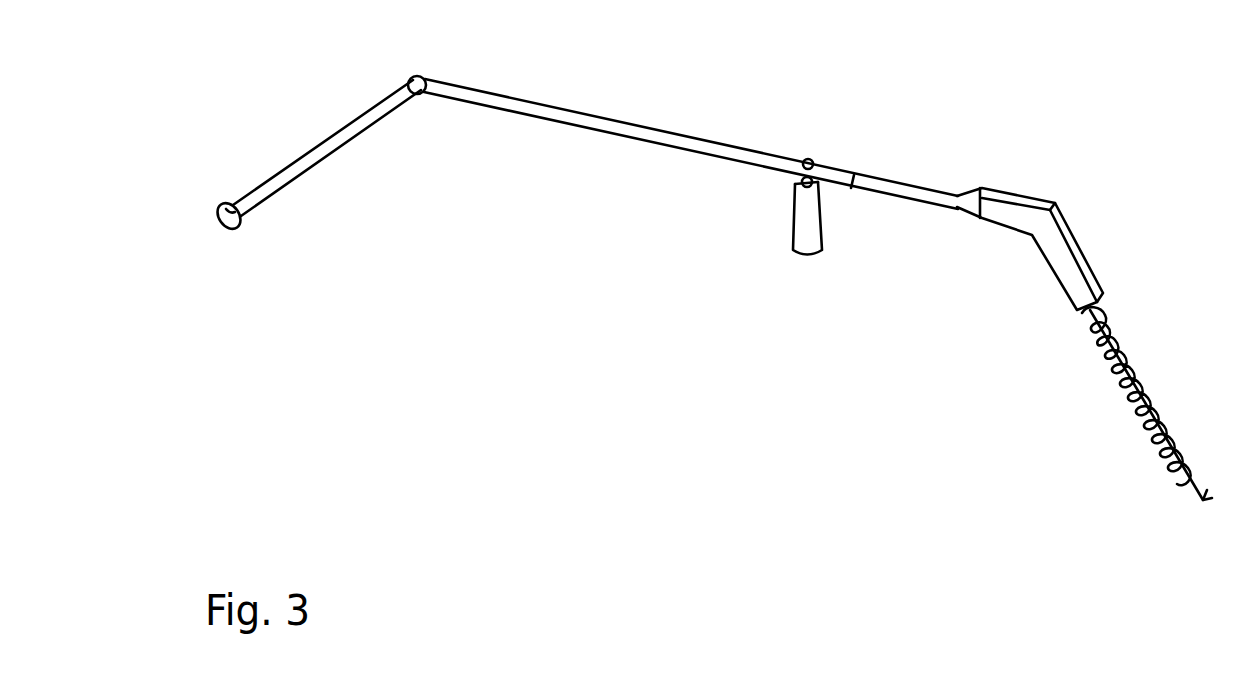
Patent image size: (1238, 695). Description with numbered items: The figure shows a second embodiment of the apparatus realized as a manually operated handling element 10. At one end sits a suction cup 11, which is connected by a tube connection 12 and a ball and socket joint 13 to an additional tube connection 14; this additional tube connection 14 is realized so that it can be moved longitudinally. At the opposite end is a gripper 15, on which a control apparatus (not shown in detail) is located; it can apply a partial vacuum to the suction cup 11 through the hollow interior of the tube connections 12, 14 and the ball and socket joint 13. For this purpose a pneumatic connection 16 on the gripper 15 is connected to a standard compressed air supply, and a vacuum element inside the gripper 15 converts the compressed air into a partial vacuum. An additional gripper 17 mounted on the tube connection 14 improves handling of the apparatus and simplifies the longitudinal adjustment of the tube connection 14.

The handling element 10 is at (622, 232).
The suction cup 11 is at (224, 208).
The tube connection 12 is at (352, 130).
The ball and socket joint 13 is at (423, 88).
The tube connection 14 is at (682, 136).
The gripper 15 is at (992, 212).
The pneumatic connection 16 is at (1126, 444).
The additional gripper 17 is at (800, 233).